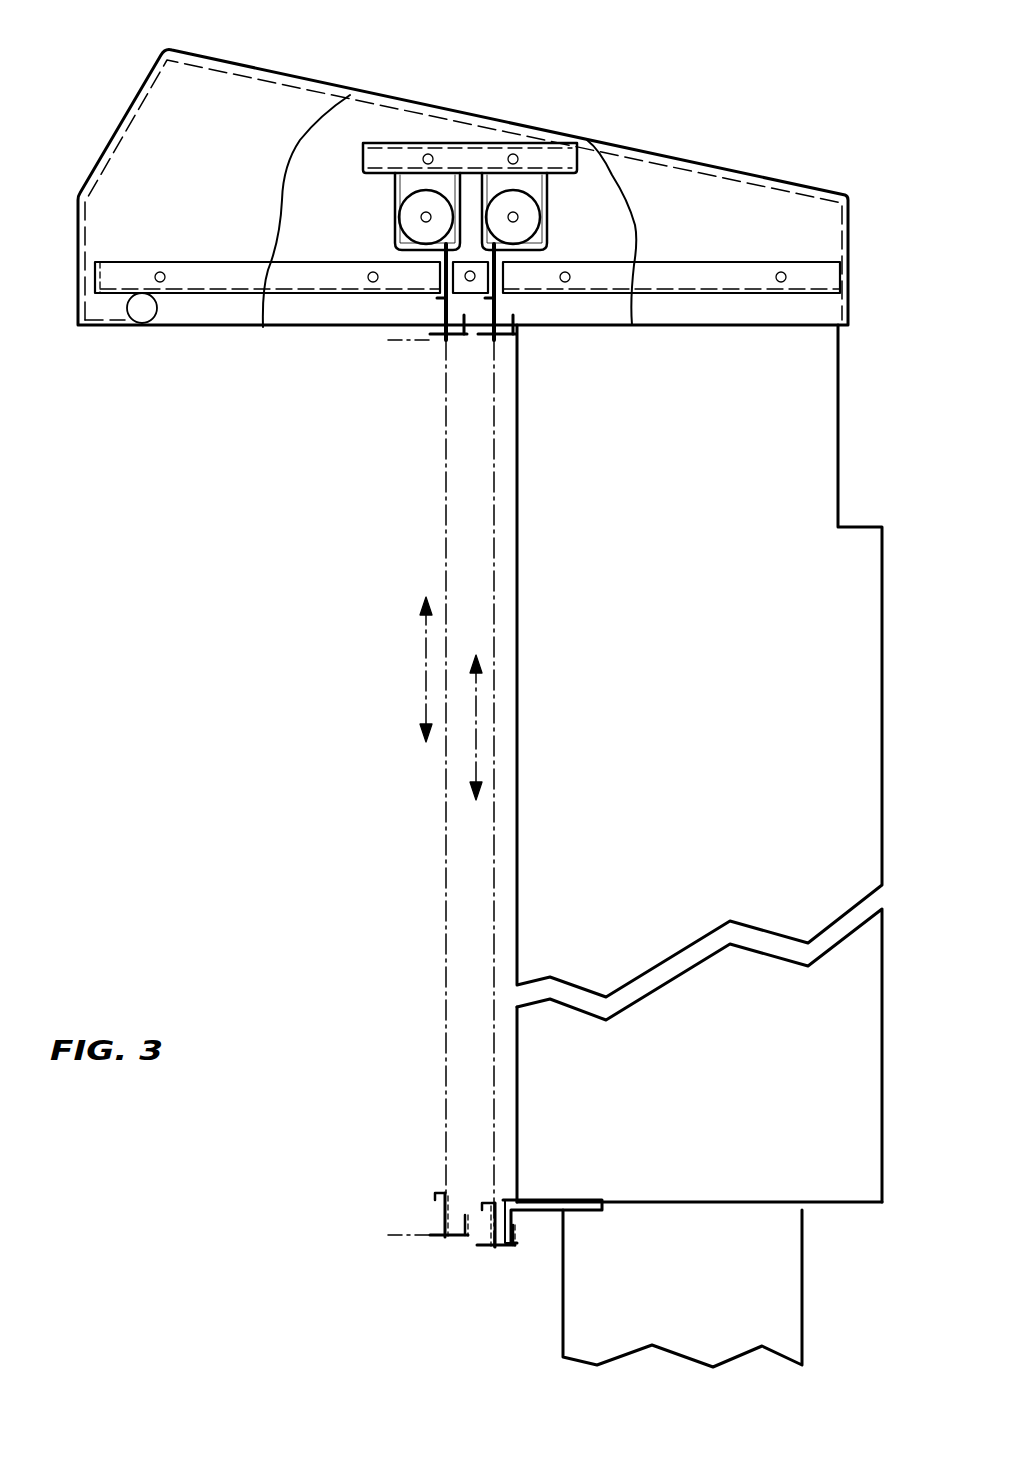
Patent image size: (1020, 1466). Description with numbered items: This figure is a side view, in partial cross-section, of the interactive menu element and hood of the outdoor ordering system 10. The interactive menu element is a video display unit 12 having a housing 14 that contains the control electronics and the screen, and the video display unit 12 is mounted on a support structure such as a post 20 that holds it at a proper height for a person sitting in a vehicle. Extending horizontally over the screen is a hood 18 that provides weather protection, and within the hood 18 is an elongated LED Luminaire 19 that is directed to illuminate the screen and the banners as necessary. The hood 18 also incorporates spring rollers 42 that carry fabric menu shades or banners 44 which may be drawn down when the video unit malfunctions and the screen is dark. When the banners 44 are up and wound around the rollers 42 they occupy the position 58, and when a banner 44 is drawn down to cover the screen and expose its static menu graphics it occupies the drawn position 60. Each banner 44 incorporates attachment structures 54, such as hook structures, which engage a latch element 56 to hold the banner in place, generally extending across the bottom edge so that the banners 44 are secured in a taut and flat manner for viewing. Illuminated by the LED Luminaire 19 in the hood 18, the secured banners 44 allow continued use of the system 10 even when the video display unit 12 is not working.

The outdoor ordering system 10 is at (108, 53).
The video display unit 12 is at (838, 438).
The housing 14 is at (820, 1205).
The hood 18 is at (735, 165).
The LED Luminaire 19 is at (155, 310).
The post 20 is at (783, 1292).
The spring roller 42 is at (418, 200).
The menu banner 44 is at (445, 260).
The attachment structure 54 is at (455, 1238).
The latch element 56 is at (537, 1205).
The up position 58 is at (386, 342).
The drawn position 60 is at (386, 1237).